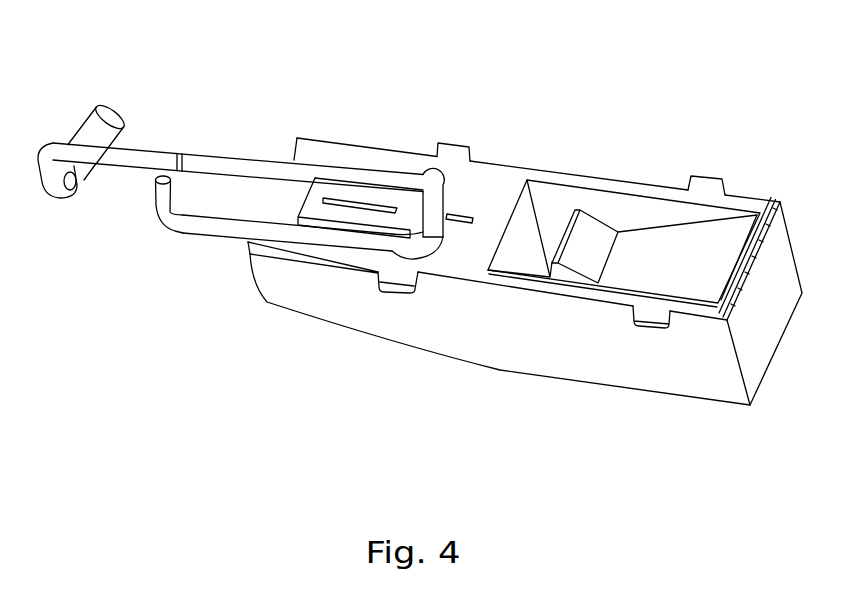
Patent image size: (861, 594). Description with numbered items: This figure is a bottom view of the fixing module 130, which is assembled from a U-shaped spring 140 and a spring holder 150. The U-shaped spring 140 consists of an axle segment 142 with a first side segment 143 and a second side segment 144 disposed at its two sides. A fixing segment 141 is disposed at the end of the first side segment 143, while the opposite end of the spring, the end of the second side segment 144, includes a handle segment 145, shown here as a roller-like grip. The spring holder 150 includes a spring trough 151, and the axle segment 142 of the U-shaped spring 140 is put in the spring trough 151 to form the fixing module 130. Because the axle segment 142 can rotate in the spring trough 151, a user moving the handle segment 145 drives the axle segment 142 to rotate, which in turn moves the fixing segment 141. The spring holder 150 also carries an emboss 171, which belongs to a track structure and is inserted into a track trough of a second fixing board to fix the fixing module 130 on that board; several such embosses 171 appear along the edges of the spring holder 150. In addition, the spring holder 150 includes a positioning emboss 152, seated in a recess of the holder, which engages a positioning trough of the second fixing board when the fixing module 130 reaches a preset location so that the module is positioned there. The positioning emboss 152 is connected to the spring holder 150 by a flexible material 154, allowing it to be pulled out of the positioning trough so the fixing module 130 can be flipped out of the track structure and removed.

The fixing module 130 is at (198, 473).
The U-shaped spring 140 is at (37, 197).
The fixing segment 141 is at (153, 197).
The axle segment 142 is at (440, 200).
The first side segment 143 is at (215, 238).
The second side segment 144 is at (233, 153).
The handle segment 145 is at (107, 103).
The spring holder 150 is at (660, 395).
The spring trough 151 is at (430, 255).
The positioning emboss 152 is at (602, 222).
The flexible material 154 is at (718, 240).
The emboss 171 is at (705, 160).